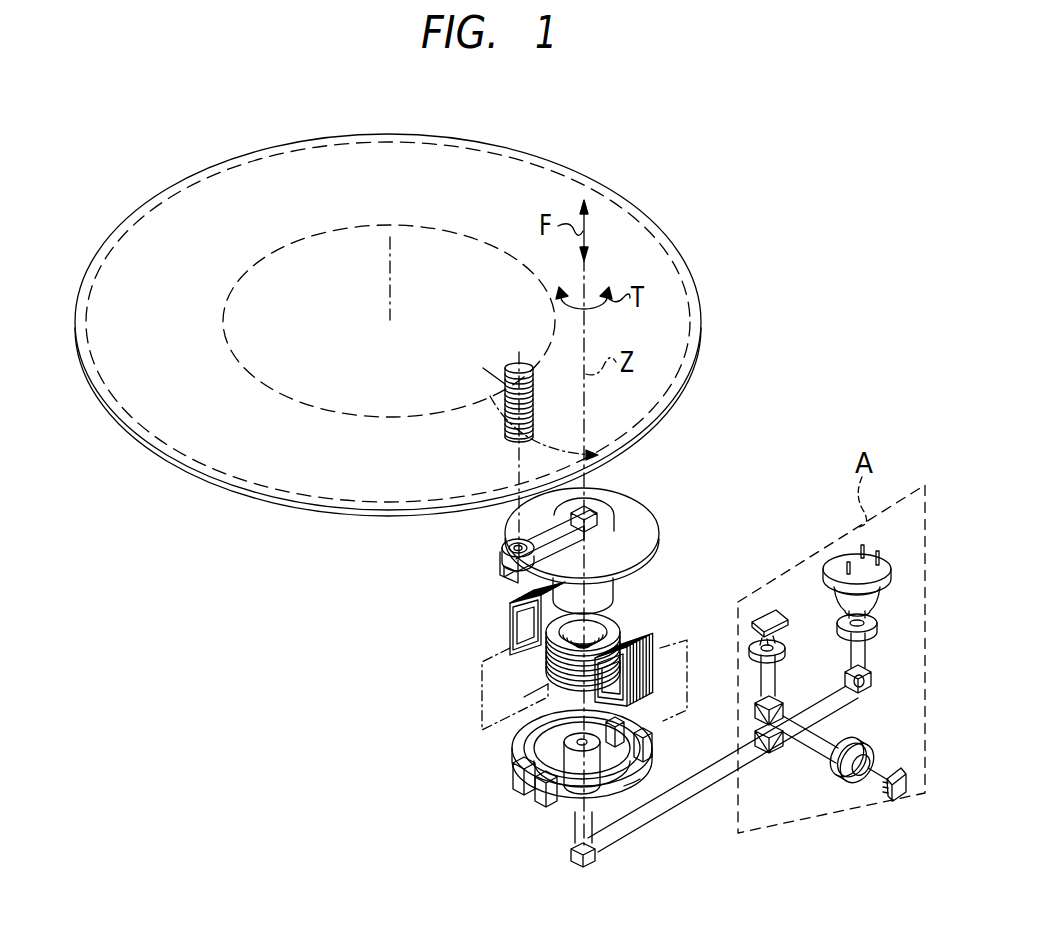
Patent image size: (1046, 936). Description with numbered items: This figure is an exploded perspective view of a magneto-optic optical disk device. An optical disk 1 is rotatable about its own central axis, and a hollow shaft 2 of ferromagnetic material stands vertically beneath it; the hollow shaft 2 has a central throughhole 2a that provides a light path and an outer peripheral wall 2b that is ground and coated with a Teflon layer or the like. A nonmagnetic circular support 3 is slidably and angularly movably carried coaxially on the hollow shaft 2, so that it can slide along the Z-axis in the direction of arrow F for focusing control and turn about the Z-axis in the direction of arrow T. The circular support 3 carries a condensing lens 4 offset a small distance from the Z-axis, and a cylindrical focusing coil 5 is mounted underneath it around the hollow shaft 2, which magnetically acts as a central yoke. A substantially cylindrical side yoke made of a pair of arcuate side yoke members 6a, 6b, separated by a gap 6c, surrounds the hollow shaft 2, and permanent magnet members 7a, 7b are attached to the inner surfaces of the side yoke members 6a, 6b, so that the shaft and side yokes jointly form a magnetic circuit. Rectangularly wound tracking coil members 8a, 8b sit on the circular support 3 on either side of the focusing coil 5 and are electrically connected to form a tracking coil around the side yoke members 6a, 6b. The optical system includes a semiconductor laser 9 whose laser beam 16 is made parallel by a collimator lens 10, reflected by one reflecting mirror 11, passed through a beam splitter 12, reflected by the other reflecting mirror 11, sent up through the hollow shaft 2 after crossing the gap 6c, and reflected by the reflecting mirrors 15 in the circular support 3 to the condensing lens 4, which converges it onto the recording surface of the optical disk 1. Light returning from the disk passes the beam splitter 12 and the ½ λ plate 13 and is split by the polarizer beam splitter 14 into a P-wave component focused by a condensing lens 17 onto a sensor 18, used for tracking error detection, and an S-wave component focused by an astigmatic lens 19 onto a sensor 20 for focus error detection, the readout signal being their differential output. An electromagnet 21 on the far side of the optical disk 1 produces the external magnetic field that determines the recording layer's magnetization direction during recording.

The optical disk 1 is at (286, 486).
The hollow shaft 2 is at (609, 796).
The central throughhole 2a is at (486, 706).
The outer peripheral wall 2b is at (577, 775).
The circular support 3 is at (640, 512).
The condensing lens 4 is at (504, 549).
The cylindrical focusing coil 5 is at (616, 636).
The side yoke member 6a is at (513, 766).
The side yoke member 6b is at (628, 794).
The gap 6c is at (636, 731).
The permanent magnet member 7a is at (530, 778).
The permanent magnet member 7b is at (646, 760).
The tracking coil member 8a is at (508, 620).
The tracking coil member 8b is at (640, 656).
The semiconductor laser 9 is at (894, 563).
The collimator lens 10 is at (879, 631).
The reflecting mirror 11 is at (592, 866).
The beam splitter 12 is at (779, 749).
The ½ λ plate 13 is at (757, 716).
The polarizer beam splitter 14 is at (757, 730).
The reflecting mirror 15 is at (596, 508).
The laser beam 16 is at (828, 703).
The condensing lens 17 is at (785, 650).
The sensor 18 is at (772, 610).
The astigmatic lens 19 is at (868, 746).
The sensor 20 is at (900, 790).
The electromagnet 21 is at (513, 370).